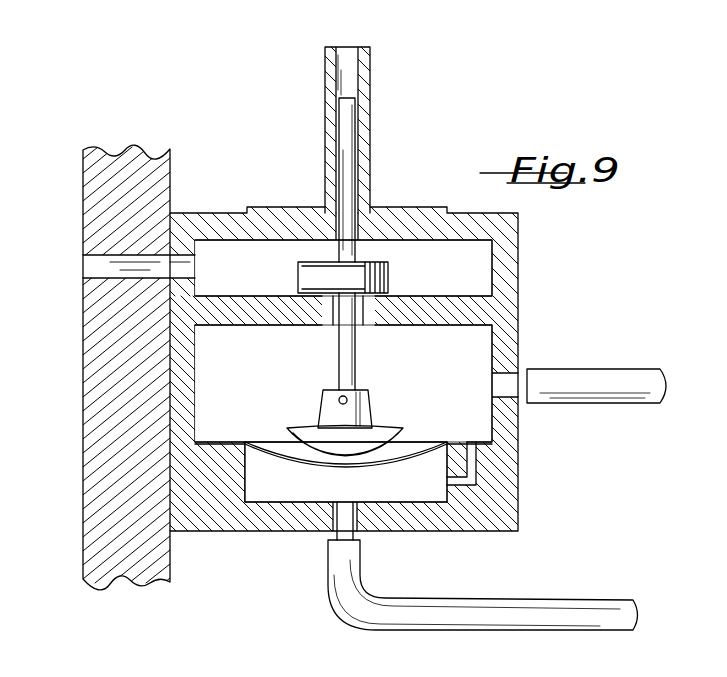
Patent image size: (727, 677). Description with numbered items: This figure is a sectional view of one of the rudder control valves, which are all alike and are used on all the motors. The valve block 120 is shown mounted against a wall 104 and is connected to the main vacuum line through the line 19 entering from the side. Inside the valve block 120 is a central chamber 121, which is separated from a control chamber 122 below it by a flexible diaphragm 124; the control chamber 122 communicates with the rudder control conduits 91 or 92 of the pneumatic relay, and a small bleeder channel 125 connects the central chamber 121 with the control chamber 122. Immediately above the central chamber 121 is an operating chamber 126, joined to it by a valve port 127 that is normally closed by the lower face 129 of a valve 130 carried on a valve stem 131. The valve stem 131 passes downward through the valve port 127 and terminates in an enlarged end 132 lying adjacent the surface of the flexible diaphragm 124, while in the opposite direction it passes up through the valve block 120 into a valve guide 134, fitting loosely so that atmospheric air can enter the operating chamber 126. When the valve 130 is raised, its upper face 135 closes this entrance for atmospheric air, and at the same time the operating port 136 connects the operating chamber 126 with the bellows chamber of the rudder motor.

The wall 104 is at (97, 410).
The operating port 136 is at (95, 265).
The valve block 120 is at (500, 505).
The operating chamber 126 is at (456, 279).
The central chamber 121 is at (439, 389).
The control chamber 122 is at (424, 491).
The bleeder channel 125 is at (470, 466).
The valve guide 134 is at (370, 130).
The valve stem 131 is at (345, 200).
The valve 130 is at (334, 287).
The upper face 135 is at (378, 261).
The lower face 129 is at (330, 305).
The valve port 127 is at (363, 313).
The enlarged end 132 is at (307, 435).
The flexible diaphragm 124 is at (275, 458).
The line 19 is at (608, 378).
The rudder control conduit 91 is at (491, 585).
The rudder control conduit 92 is at (560, 600).